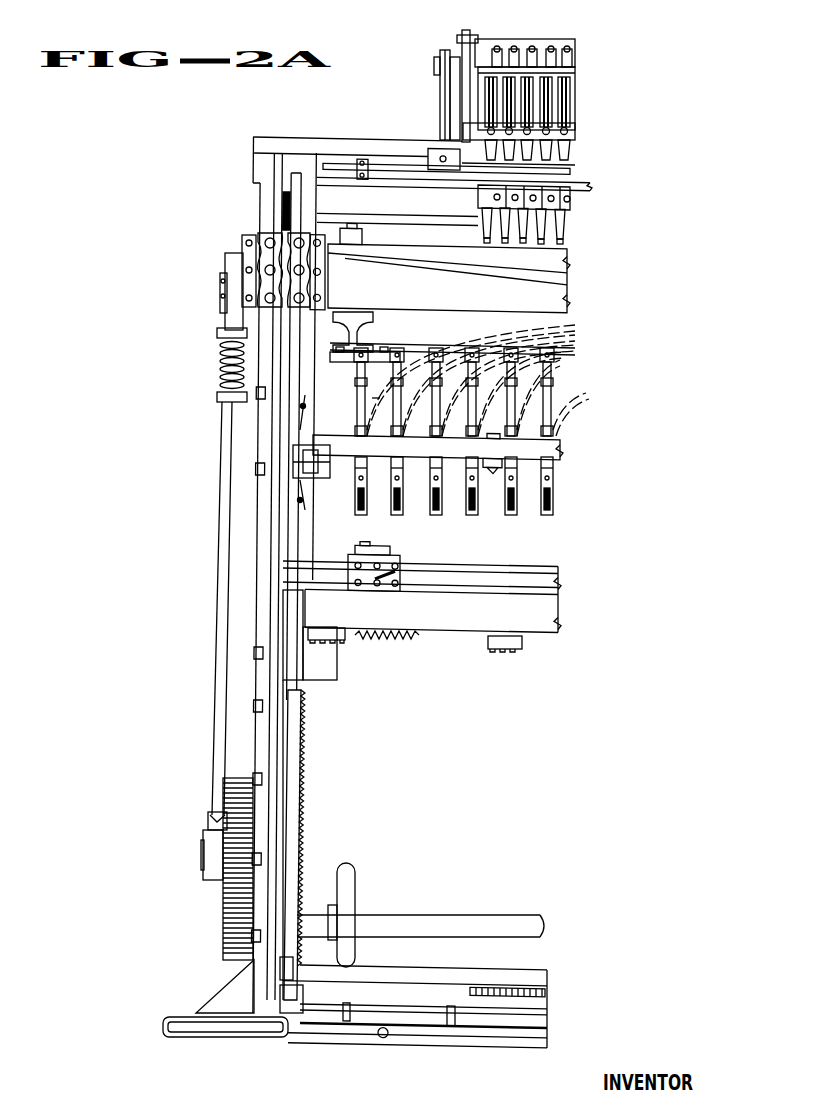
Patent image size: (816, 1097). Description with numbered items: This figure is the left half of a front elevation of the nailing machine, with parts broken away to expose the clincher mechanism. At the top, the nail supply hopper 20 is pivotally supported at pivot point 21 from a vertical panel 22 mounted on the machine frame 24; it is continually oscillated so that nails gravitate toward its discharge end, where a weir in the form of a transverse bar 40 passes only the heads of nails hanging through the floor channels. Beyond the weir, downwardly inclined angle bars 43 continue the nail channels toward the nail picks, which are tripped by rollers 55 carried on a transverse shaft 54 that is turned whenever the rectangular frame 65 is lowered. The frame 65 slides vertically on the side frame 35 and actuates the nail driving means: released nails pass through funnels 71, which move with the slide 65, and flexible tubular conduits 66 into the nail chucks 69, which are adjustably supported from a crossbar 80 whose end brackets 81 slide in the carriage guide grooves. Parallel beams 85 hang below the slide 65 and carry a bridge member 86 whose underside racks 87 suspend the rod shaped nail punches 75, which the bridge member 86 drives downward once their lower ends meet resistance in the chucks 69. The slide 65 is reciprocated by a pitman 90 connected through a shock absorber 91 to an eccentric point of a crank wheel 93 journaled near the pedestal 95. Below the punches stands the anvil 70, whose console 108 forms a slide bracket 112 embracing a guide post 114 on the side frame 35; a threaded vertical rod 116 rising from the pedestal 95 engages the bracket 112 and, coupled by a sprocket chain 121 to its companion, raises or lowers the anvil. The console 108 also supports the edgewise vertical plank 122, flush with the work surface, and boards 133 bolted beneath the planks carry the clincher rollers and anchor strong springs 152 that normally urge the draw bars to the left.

The nail supply hopper 20 is at (548, 37).
The pivot point 21 is at (434, 62).
The vertical panel 22 is at (452, 97).
The machine frame 24 is at (372, 147).
The side frame 35 is at (278, 525).
The transverse bar weir 40 is at (577, 47).
The angle bars 43 is at (562, 112).
The transverse shaft 54 is at (459, 126).
The rollers 55 is at (570, 122).
The rectangular frame slide 65 is at (545, 304).
The flexible tubular conduits 66 is at (577, 327).
The nail chucks 69 is at (434, 510).
The anvil 70 is at (568, 583).
The funnels 71 is at (548, 217).
The nail punches 75 is at (372, 397).
The crossbar 80 is at (565, 459).
The brackets 81 is at (323, 487).
The parallel beams 85 is at (388, 344).
The bridge member 86 is at (362, 350).
The racks 87 is at (545, 350).
The pitman 90 is at (220, 630).
The shock absorber 91 is at (217, 363).
The crank wheel 93 is at (232, 927).
The pedestal 95 is at (320, 1030).
The console 108 is at (296, 652).
The slide bracket 112 is at (337, 658).
The guide post 114 is at (285, 737).
The threaded vertical rod 116 is at (300, 773).
The sprocket chain 121 is at (517, 995).
The vertical plank 122 is at (525, 626).
The boards 133 is at (340, 620).
The springs 152 is at (398, 650).